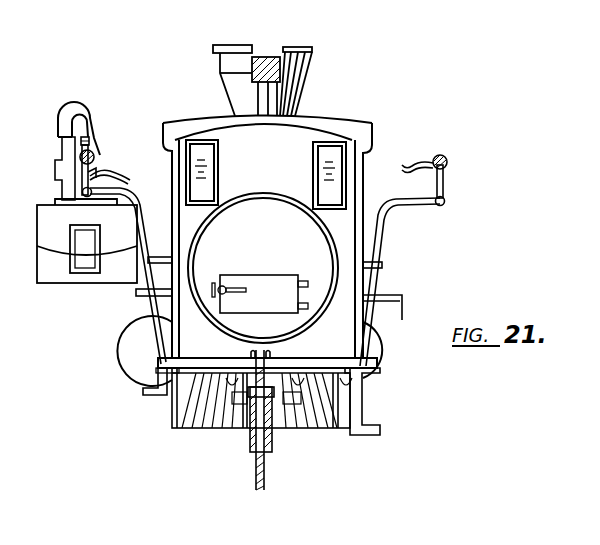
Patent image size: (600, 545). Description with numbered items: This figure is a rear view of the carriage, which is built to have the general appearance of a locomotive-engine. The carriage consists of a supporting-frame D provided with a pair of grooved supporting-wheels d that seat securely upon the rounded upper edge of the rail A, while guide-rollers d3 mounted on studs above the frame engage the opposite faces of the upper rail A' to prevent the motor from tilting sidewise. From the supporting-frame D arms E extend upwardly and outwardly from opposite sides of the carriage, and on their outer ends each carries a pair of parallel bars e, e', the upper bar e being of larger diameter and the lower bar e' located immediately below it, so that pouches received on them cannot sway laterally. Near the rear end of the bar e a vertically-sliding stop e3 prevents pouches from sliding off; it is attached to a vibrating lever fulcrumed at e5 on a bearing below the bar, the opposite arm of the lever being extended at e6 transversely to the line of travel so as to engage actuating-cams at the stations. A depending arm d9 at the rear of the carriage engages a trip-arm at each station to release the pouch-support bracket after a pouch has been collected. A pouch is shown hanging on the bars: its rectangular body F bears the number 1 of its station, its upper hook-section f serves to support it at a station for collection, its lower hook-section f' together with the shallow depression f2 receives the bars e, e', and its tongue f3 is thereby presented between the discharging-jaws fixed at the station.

The rail A is at (266, 420).
The upper rail A' is at (266, 53).
The guide-rollers d3 is at (252, 53).
The supporting-wheels d is at (272, 436).
The depending arm d9 is at (363, 408).
The supporting-frame D is at (267, 367).
The arms E is at (152, 278).
The bar e is at (253, 168).
The bar e' is at (259, 197).
The vertically-sliding stop e3 is at (90, 141).
The fulcrum e5 is at (94, 155).
The extended lever arm e6 is at (126, 178).
The body of the pouch F is at (87, 241).
The pouch number 1 is at (85, 249).
The upper hook-section f is at (76, 119).
The lower hook-section f' is at (103, 162).
The shallow depression f2 is at (118, 194).
The tongue f3 is at (62, 137).